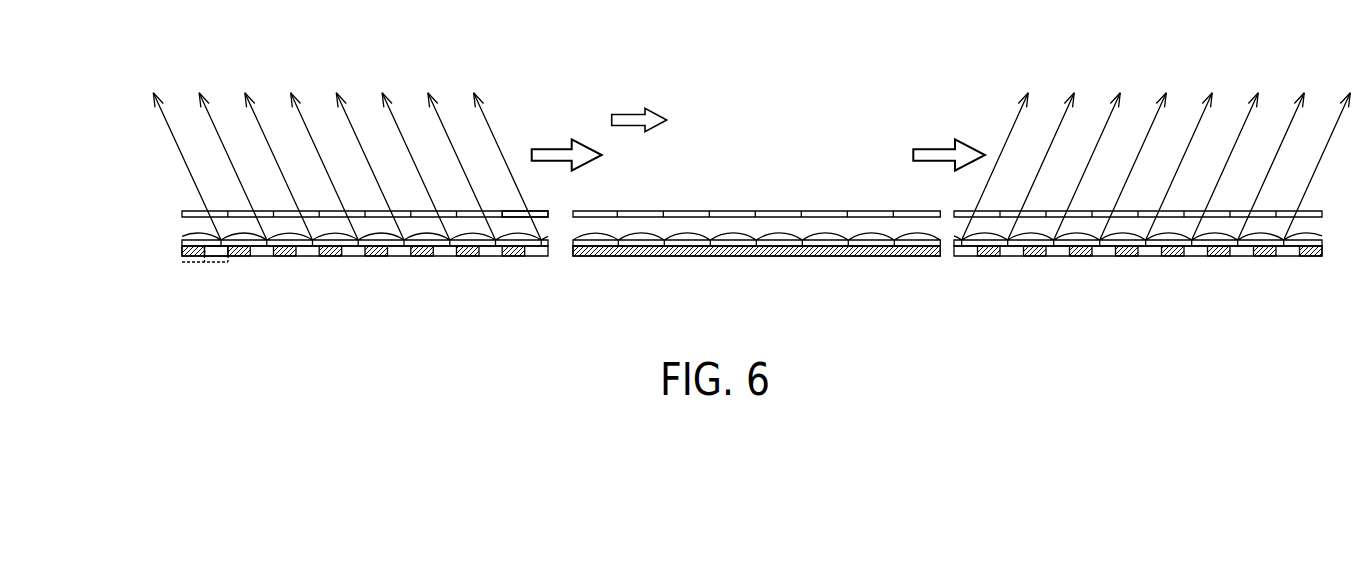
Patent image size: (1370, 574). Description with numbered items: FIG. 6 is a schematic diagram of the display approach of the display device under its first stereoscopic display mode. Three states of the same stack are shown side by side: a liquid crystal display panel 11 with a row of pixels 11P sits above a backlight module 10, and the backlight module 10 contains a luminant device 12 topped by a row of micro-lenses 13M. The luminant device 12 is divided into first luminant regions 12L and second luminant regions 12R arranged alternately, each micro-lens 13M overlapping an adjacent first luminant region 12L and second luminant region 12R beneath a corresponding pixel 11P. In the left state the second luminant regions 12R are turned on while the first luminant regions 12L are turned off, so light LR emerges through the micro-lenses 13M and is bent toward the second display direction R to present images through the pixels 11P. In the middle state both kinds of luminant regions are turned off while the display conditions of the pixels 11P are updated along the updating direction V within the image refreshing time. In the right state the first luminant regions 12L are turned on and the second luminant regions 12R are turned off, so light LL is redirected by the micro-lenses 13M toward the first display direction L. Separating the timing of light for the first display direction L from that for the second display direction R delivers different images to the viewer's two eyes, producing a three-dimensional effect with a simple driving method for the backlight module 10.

The backlight module 10 is at (704, 247).
The liquid crystal display panel 11 is at (182, 217).
The pixel 11P is at (548, 213).
The luminant device 12 is at (728, 270).
The first luminant region 12L is at (197, 262).
The second luminant region 12R is at (217, 262).
The micro-lens 13M is at (199, 237).
The light generated from the second luminant regions LR is at (266, 243).
The light generated from the first luminant regions LL is at (1008, 242).
The second display direction R is at (313, 93).
The first display direction L is at (1200, 58).
The updating direction V is at (639, 100).